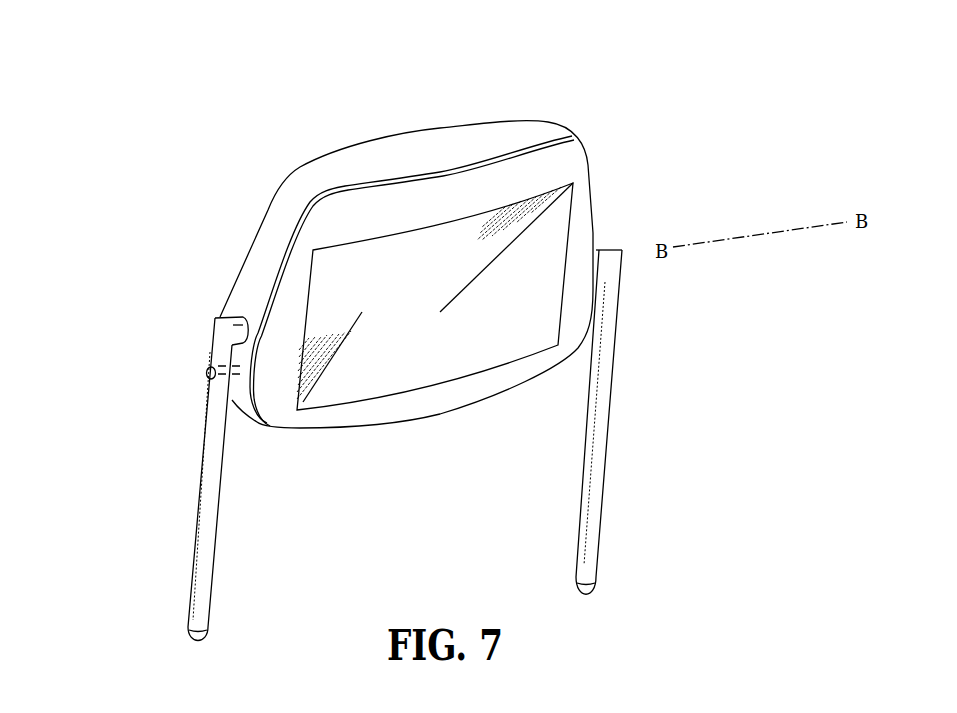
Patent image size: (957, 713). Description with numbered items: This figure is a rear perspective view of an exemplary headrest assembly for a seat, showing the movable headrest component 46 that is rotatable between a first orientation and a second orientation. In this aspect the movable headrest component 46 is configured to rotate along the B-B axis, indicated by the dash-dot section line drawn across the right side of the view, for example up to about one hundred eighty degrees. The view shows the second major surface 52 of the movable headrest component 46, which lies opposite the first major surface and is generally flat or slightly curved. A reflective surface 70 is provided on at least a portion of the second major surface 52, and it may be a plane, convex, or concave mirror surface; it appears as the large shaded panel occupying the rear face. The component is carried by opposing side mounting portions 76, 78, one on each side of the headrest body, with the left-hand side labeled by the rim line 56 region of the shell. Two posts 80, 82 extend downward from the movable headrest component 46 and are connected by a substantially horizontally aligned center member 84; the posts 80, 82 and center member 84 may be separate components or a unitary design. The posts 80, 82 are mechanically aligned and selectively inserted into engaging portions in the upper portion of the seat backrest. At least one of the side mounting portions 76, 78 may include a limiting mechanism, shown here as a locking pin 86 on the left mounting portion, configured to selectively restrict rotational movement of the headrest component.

The movable headrest component 46 is at (760, 149).
The second major surface 52 is at (478, 207).
The bezel / inner rim 56 is at (260, 278).
The reflective surface 70 is at (438, 356).
The side mounting portion 76 is at (163, 236).
The side mounting portion 78 is at (633, 224).
The post 80 is at (210, 508).
The post 82 is at (603, 402).
The center member 84 is at (237, 327).
The locking pin 86 is at (208, 378).